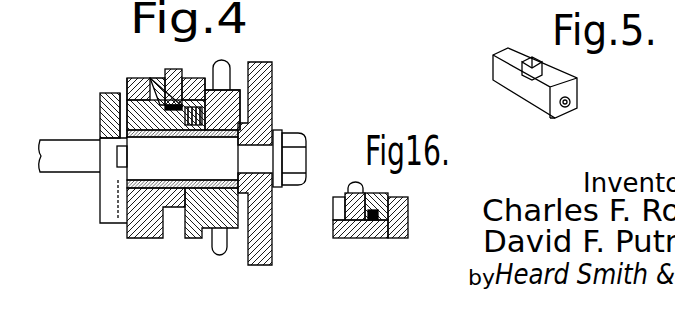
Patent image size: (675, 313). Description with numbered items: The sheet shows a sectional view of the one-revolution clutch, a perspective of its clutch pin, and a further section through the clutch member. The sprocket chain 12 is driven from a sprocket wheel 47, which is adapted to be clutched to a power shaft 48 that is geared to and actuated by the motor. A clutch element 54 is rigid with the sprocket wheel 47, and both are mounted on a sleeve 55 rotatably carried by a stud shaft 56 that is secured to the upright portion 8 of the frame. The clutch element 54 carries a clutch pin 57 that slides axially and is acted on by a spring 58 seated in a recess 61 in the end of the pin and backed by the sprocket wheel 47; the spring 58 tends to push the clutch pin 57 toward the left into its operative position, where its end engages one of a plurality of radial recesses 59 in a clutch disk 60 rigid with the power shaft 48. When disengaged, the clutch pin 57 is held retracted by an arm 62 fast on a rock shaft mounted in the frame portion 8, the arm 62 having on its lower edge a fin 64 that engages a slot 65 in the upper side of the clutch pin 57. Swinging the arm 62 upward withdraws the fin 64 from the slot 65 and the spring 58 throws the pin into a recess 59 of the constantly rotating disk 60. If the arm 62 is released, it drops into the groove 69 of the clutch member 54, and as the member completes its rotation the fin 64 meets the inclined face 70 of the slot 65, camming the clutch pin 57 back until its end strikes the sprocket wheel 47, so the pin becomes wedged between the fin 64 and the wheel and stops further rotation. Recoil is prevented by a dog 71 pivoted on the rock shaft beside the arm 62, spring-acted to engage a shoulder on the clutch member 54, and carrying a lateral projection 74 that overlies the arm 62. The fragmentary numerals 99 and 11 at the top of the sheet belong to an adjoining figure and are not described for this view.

In FIG. 4, the portion of the frame 8 is at (272, 230).
In FIG. 4, the sprocket wheel 47 is at (222, 217).
In FIG. 4, the power shaft 48 is at (62, 160).
In FIG. 4, the clutch element 54 is at (138, 237).
In FIG. 16, the clutch element 54 is at (355, 228).
In FIG. 4, the sleeve 55 is at (173, 178).
In FIG. 4, the stud shaft 56 is at (203, 157).
In FIG. 4, the clutch pin 57 is at (138, 107).
In FIG. 5, the clutch pin 57 is at (503, 82).
In FIG. 4, the spring 58 is at (238, 103).
In FIG. 4, the radial recesses 59 is at (118, 102).
In FIG. 4, the clutch disk 60 is at (103, 115).
In FIG. 4, the recess 61 is at (228, 83).
In FIG. 5, the recess 61 is at (567, 110).
In FIG. 4, the arm 62 is at (172, 108).
In FIG. 16, the arm 62 is at (378, 222).
In FIG. 4, the fin 64 is at (160, 103).
In FIG. 4, the slot 65 is at (175, 113).
In FIG. 5, the slot 65 is at (540, 62).
In FIG. 4, the groove 69 is at (173, 220).
In FIG. 5, the inclined face 70 is at (547, 65).
In FIG. 16, the dog 71 is at (342, 207).
In FIG. 16, the lateral projection 74 is at (370, 185).
In FIG. 4, the sprocket chain 12 is at (301, 6).
In FIG. 4, the member 99 is at (356, 7).
In FIG. 4, the frame member 11 is at (406, 5).